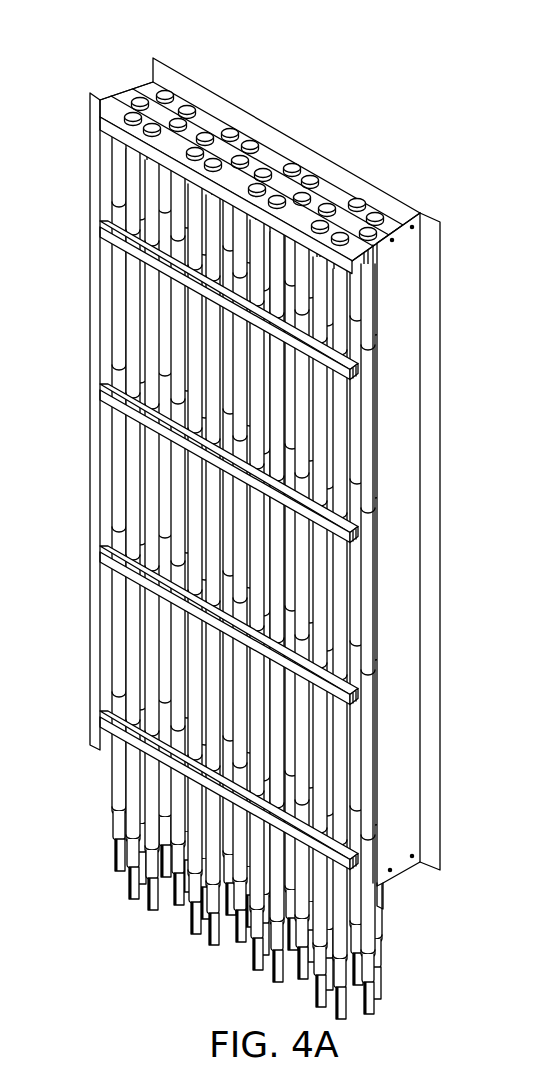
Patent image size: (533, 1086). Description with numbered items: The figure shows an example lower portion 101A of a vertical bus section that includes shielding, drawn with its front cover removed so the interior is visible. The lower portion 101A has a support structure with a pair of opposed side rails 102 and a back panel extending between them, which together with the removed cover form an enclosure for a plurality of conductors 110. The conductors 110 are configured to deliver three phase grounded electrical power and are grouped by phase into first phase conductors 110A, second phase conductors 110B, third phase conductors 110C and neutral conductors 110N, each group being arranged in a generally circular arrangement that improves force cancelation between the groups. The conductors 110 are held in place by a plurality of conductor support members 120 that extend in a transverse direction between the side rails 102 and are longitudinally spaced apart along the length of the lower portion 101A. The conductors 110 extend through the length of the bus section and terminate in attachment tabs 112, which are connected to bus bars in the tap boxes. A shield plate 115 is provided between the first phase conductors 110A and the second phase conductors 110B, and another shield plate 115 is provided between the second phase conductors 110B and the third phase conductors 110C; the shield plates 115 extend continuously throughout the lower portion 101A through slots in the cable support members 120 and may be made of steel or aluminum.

The lower portion 101A is at (85, 68).
The side rails 102 is at (12, 249).
The conductors 110 is at (221, 570).
The first phase conductors 110A is at (185, 95).
The second phase conductors 110B is at (262, 125).
The third phase conductors 110C is at (312, 163).
The neutral conductors 110N is at (372, 200).
The attachment tabs 112 is at (370, 970).
The shield plate 115 is at (212, 778).
The conductor support members 120 is at (147, 152).